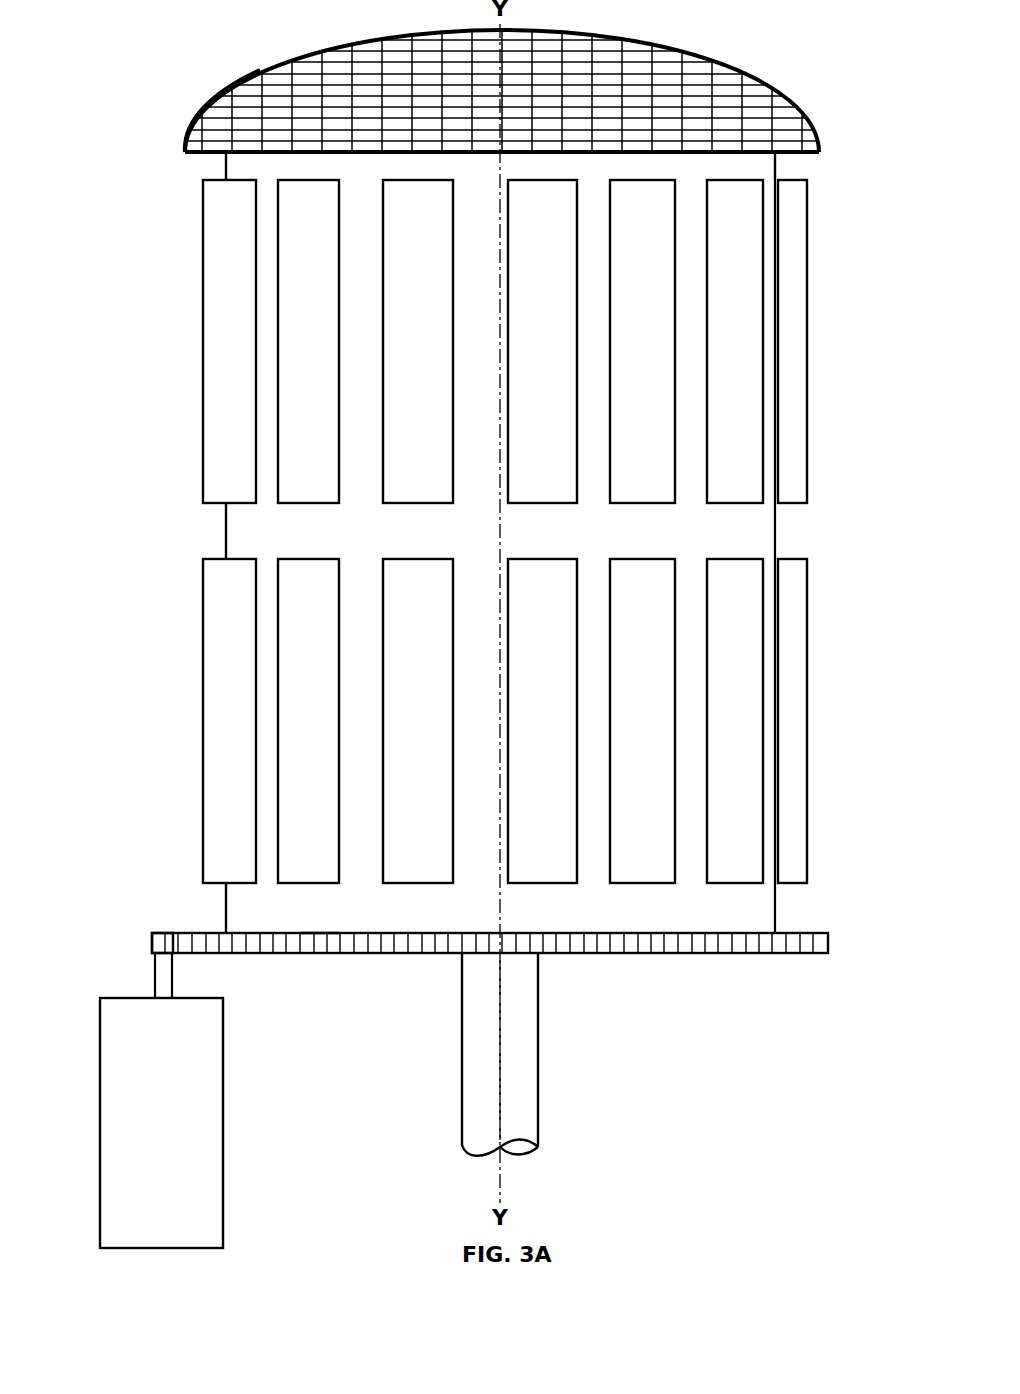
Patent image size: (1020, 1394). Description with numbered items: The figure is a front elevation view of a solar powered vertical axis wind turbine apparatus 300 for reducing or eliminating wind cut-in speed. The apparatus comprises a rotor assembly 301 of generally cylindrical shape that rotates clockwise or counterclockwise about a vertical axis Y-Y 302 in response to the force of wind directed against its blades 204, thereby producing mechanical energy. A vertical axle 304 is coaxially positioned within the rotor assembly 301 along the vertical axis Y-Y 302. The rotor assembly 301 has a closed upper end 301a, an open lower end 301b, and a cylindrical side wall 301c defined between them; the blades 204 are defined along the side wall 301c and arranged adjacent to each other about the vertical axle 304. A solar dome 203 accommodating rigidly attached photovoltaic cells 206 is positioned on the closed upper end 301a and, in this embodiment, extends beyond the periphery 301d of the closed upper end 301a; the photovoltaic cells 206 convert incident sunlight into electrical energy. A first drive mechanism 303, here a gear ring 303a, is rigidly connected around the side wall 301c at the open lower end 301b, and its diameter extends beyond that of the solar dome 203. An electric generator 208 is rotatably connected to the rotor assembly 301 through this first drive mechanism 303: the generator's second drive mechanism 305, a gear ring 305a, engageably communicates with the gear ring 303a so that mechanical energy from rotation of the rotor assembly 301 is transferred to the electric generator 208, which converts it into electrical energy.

The solar powered vertical axis wind turbine apparatus 300 is at (768, 50).
The solar dome 203 is at (381, 39).
The photovoltaic cells 206 is at (233, 102).
The rotor assembly 301 is at (223, 162).
The closed upper end 301a is at (306, 146).
The open lower end 301b is at (412, 968).
The side wall 301c is at (224, 535).
The periphery 301d is at (779, 156).
The blades 204 is at (301, 438).
The first drive mechanism 303 is at (684, 958).
The gear ring 303a is at (319, 941).
The second drive mechanism 305 is at (149, 940).
The gear ring 305a is at (153, 950).
The electric generator 208 is at (196, 1125).
The vertical axle 304 is at (541, 1078).
The vertical axis Y-Y 302 is at (502, 1013).